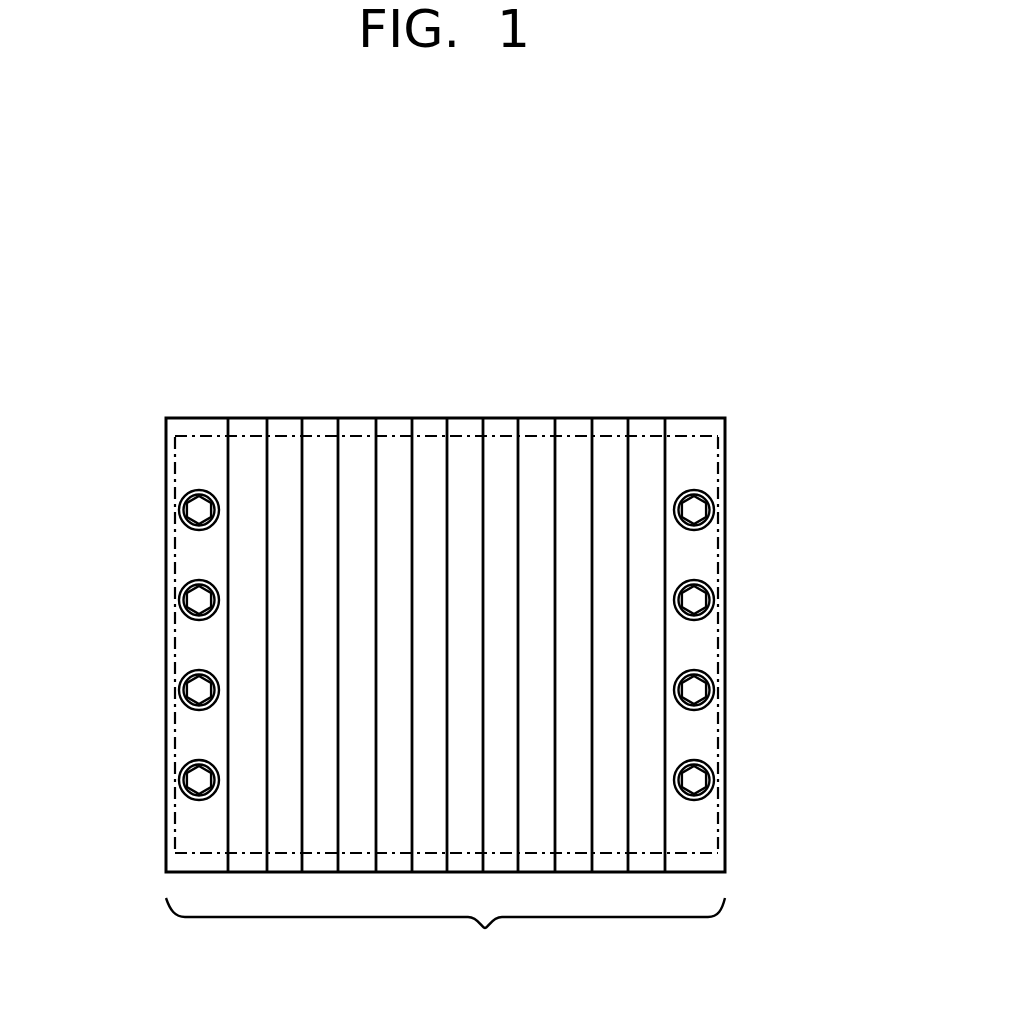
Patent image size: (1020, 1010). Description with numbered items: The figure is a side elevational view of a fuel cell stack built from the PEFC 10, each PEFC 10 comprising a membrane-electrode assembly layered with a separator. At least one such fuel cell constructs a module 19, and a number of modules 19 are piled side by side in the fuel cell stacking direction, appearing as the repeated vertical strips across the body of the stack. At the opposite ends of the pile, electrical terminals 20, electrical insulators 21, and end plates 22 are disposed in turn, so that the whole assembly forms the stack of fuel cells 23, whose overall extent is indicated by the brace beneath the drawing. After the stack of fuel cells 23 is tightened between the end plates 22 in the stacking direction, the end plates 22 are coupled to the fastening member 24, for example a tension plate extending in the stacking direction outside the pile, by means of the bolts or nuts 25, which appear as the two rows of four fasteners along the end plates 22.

The PEFC 10 is at (742, 800).
The module 19 is at (321, 431).
The electrical terminal 20 is at (278, 430).
The electrical insulator 21 is at (242, 424).
The end plate 22 is at (167, 424).
The stack of fuel cells 23 is at (445, 938).
The fastening member 24 is at (197, 437).
The bolts or nuts 25 is at (196, 508).